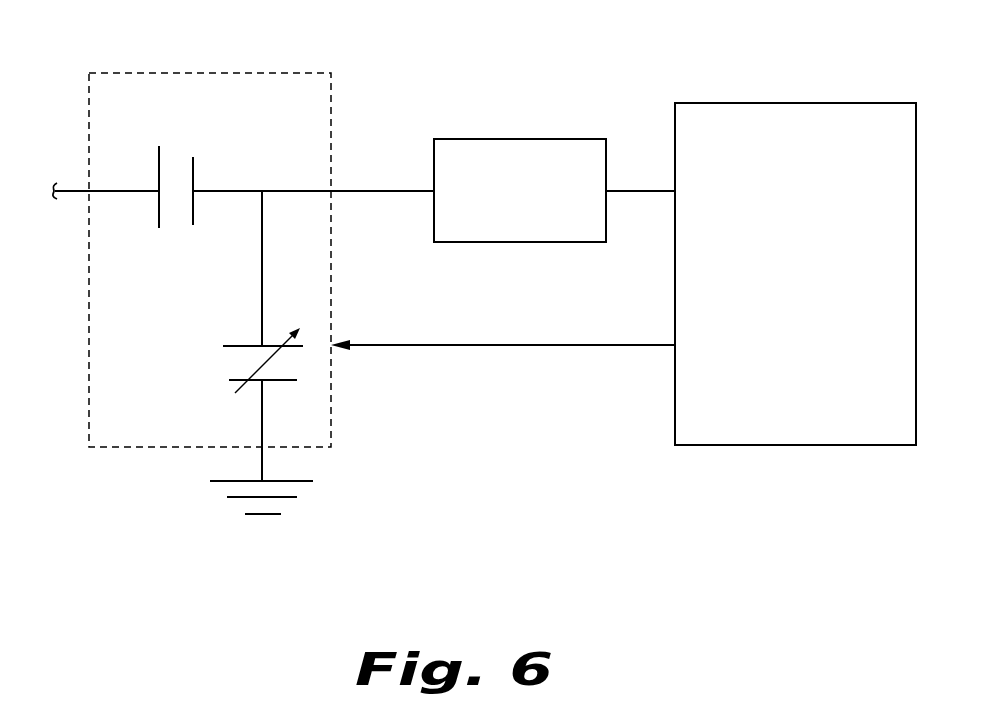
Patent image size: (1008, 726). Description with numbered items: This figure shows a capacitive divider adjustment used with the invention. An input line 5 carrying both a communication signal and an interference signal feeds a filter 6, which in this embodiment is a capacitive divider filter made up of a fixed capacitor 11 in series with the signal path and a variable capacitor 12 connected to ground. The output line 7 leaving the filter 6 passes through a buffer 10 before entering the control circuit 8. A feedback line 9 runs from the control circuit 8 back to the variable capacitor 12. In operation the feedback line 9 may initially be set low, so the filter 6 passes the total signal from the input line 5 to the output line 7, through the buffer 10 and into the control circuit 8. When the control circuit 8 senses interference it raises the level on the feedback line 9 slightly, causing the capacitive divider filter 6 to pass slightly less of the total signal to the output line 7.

The input line 5 is at (57, 189).
The filter 6 is at (102, 449).
The output line 7 is at (397, 190).
The control circuit 8 is at (816, 103).
The feedback line 9 is at (512, 347).
The buffer 10 is at (587, 138).
The fixed capacitor 11 is at (210, 143).
The variable capacitor 12 is at (208, 384).